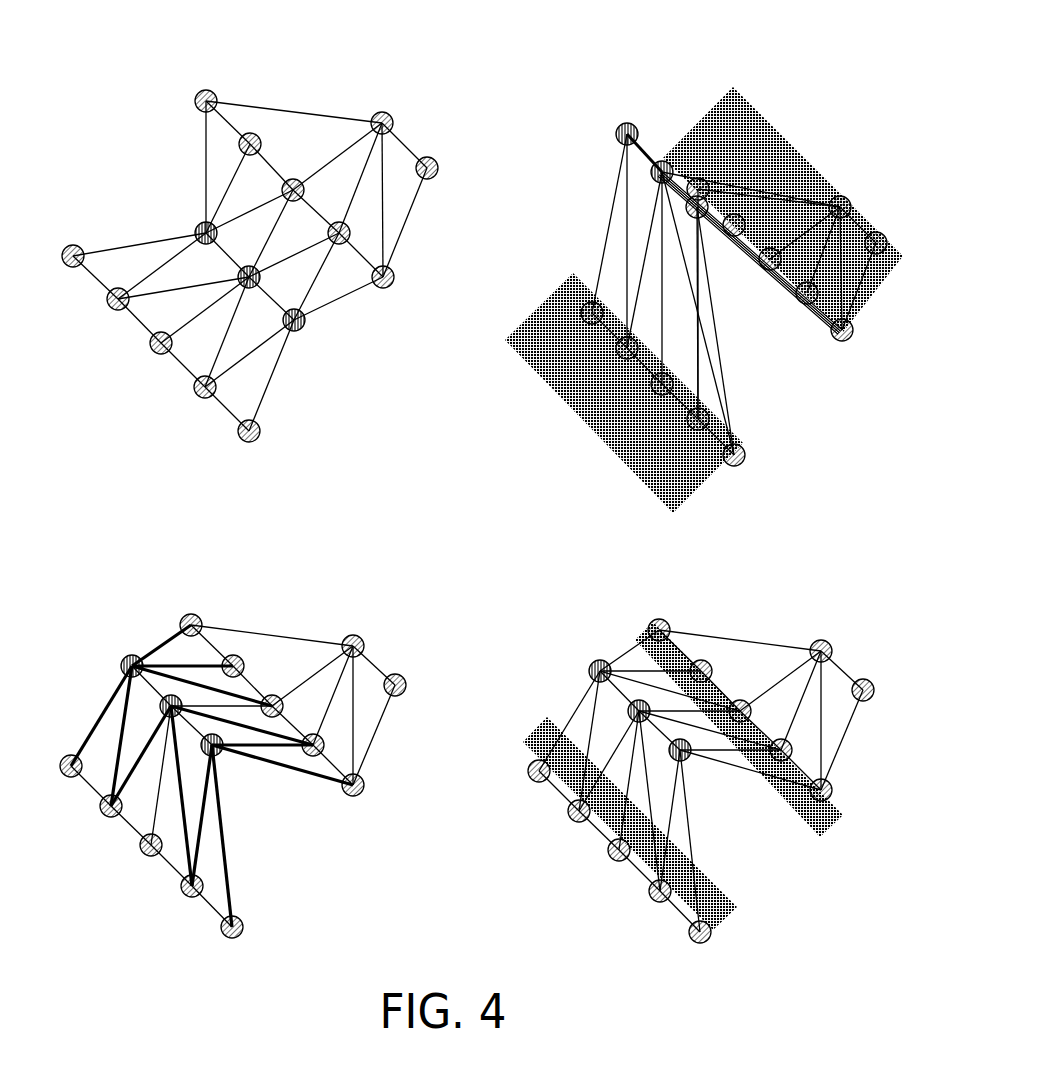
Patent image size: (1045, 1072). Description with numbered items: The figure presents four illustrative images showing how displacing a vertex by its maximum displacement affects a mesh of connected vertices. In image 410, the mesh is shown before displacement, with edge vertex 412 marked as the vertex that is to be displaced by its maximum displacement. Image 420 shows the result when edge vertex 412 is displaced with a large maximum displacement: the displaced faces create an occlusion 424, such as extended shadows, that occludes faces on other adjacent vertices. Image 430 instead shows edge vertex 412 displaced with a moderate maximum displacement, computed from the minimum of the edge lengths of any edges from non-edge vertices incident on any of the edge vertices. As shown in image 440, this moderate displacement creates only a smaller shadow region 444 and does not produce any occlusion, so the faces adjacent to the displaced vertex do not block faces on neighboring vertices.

The image 410 is at (122, 110).
The edge vertex 412 is at (194, 229).
The image 420 is at (704, 273).
The occlusion 424 is at (722, 113).
The image 430 is at (120, 600).
The image 440 is at (706, 755).
The shadow region 444 is at (830, 818).